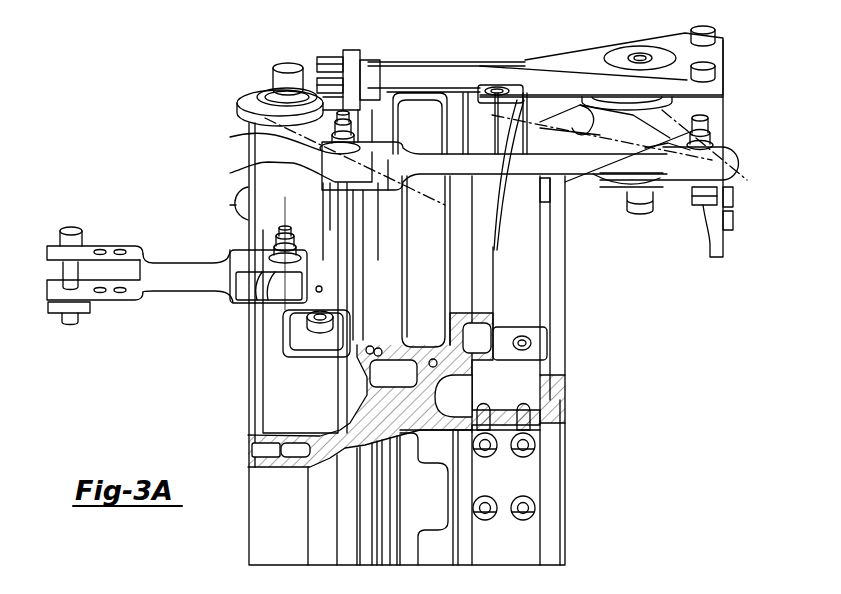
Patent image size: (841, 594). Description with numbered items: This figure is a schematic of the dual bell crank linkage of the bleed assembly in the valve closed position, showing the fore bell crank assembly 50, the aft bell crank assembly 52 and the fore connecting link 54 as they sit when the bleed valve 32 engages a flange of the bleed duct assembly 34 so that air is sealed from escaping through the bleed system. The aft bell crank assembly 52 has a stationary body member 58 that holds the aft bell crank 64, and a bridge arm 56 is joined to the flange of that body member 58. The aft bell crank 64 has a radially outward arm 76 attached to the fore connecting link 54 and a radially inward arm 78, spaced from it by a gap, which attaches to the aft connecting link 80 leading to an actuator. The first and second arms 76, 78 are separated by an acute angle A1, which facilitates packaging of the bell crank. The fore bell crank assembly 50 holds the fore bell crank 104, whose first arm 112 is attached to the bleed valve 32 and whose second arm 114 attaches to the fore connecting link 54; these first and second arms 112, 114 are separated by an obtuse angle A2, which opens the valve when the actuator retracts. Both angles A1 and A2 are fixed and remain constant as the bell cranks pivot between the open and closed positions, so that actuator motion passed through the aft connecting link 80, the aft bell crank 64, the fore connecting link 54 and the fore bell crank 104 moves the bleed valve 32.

The bleed valve 32 is at (468, 97).
The bleed duct assembly 34 is at (364, 118).
The fore bell crank assembly 50 is at (669, 226).
The aft bell crank assembly 52 is at (221, 115).
The fore connecting link 54 is at (473, 168).
The bridge arm 56 is at (574, 62).
The body member 58 is at (236, 205).
The aft bell crank 64 is at (260, 172).
The radially outward arm 76 is at (250, 135).
The radially inward arm 78 is at (265, 290).
The aft connecting link 80 is at (53, 247).
The fore bell crank 104 is at (617, 135).
The first arm 112 is at (540, 118).
The second arm 114 is at (712, 160).
The acute angle A1 is at (416, 195).
The obtuse angle A2 is at (712, 162).